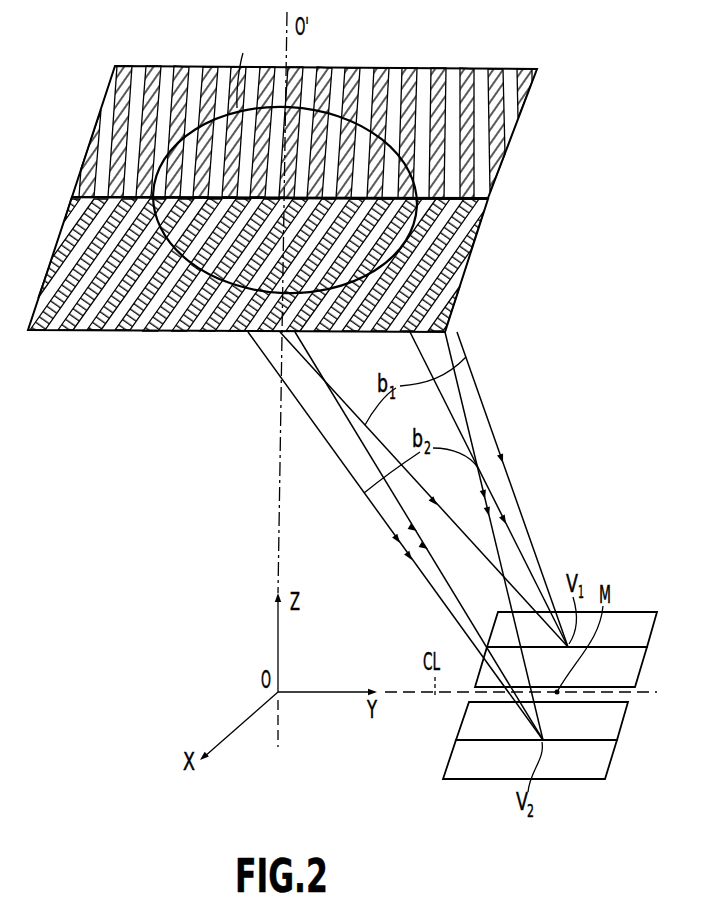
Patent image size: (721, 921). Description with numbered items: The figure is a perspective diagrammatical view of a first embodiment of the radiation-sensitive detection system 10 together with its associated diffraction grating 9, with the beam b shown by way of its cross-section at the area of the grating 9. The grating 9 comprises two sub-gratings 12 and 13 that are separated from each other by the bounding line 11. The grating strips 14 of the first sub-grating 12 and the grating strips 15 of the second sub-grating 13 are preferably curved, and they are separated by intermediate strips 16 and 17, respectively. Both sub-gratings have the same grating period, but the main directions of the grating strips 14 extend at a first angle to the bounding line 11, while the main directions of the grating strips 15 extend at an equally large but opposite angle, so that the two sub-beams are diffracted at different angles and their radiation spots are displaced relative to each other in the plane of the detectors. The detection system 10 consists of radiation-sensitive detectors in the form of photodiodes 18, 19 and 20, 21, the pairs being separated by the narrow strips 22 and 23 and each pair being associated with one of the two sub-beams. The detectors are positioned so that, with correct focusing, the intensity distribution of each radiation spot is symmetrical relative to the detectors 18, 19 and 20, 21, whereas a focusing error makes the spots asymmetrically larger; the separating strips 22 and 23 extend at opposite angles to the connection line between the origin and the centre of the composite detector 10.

The grating 9 is at (460, 60).
The radiation-sensitive detection system 10 is at (655, 597).
The bounding line 11 is at (70, 197).
The first sub-grating 12 is at (100, 103).
The second sub-grating 13 is at (38, 296).
The grating strips of the first sub-grating 14 is at (340, 68).
The grating strips of the second sub-grating 15 is at (143, 330).
The intermediate strips 16 is at (377, 80).
The intermediate strips 17 is at (188, 329).
The photodiode 18 is at (642, 627).
The photodiode 19 is at (627, 672).
The photodiode 20 is at (615, 716).
The photodiode 21 is at (597, 767).
The separating strip 22 is at (633, 645).
The separating strip 23 is at (605, 737).